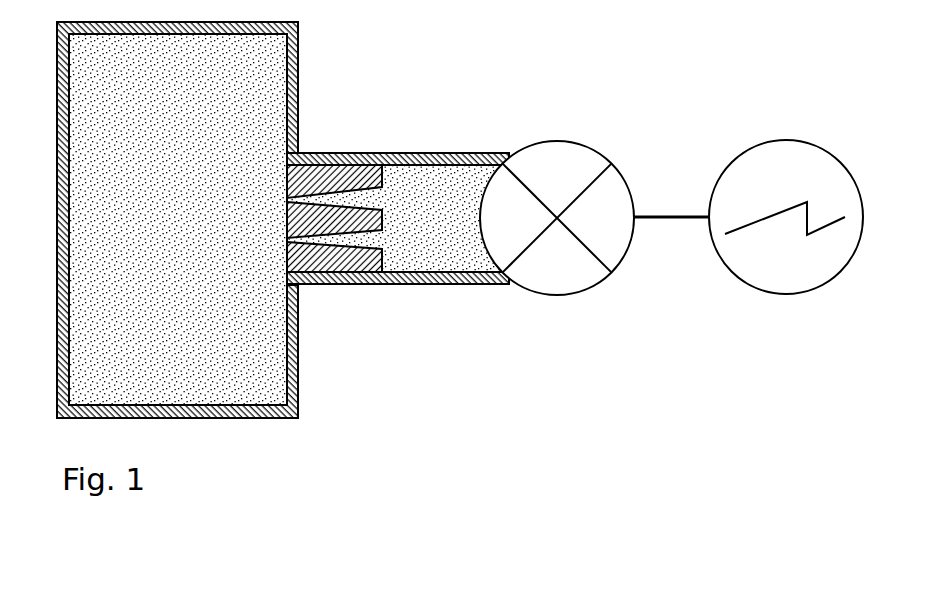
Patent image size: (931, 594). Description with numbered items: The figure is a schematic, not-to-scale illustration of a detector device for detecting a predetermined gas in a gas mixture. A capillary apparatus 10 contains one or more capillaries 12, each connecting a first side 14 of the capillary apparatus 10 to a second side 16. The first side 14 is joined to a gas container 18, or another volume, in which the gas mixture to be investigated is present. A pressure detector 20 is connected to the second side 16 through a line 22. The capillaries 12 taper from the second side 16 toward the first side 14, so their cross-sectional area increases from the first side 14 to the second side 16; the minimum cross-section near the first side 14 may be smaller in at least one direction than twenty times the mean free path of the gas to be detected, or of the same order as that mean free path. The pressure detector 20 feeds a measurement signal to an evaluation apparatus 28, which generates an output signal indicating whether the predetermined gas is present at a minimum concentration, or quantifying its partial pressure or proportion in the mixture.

The capillary apparatus 10 is at (347, 177).
The capillary 12 is at (347, 242).
The first side 14 is at (286, 224).
The second side 16 is at (383, 224).
The gas container 18 is at (262, 368).
The pressure detector 20 is at (551, 177).
The line 22 is at (431, 212).
The evaluation apparatus 28 is at (792, 177).